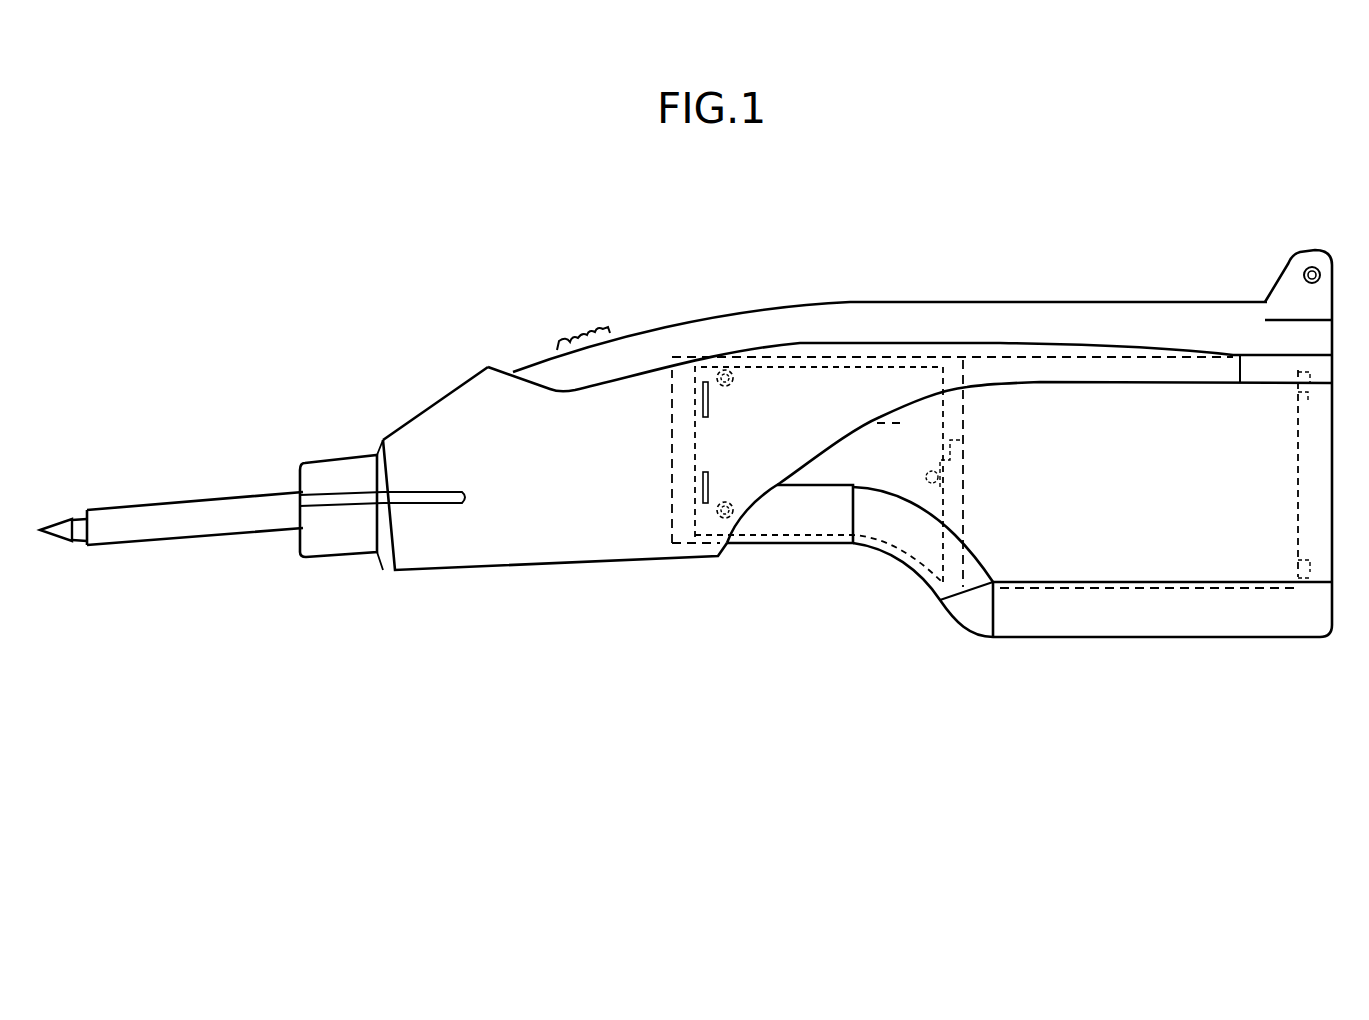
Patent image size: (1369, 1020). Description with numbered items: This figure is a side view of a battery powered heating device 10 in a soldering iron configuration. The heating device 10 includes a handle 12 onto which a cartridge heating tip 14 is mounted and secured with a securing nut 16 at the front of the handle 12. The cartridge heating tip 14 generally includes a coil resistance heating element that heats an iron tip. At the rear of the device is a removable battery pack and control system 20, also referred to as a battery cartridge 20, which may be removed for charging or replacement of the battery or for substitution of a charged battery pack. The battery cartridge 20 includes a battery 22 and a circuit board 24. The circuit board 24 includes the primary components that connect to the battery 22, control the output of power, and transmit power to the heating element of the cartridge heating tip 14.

The battery powered heating device 10 is at (515, 317).
The handle 12 is at (517, 560).
The cartridge heating tip 14 is at (145, 548).
The securing nut 16 is at (337, 453).
The removable battery pack and control system 20 is at (1280, 633).
The battery 22 is at (1125, 433).
The circuit board 24 is at (840, 477).